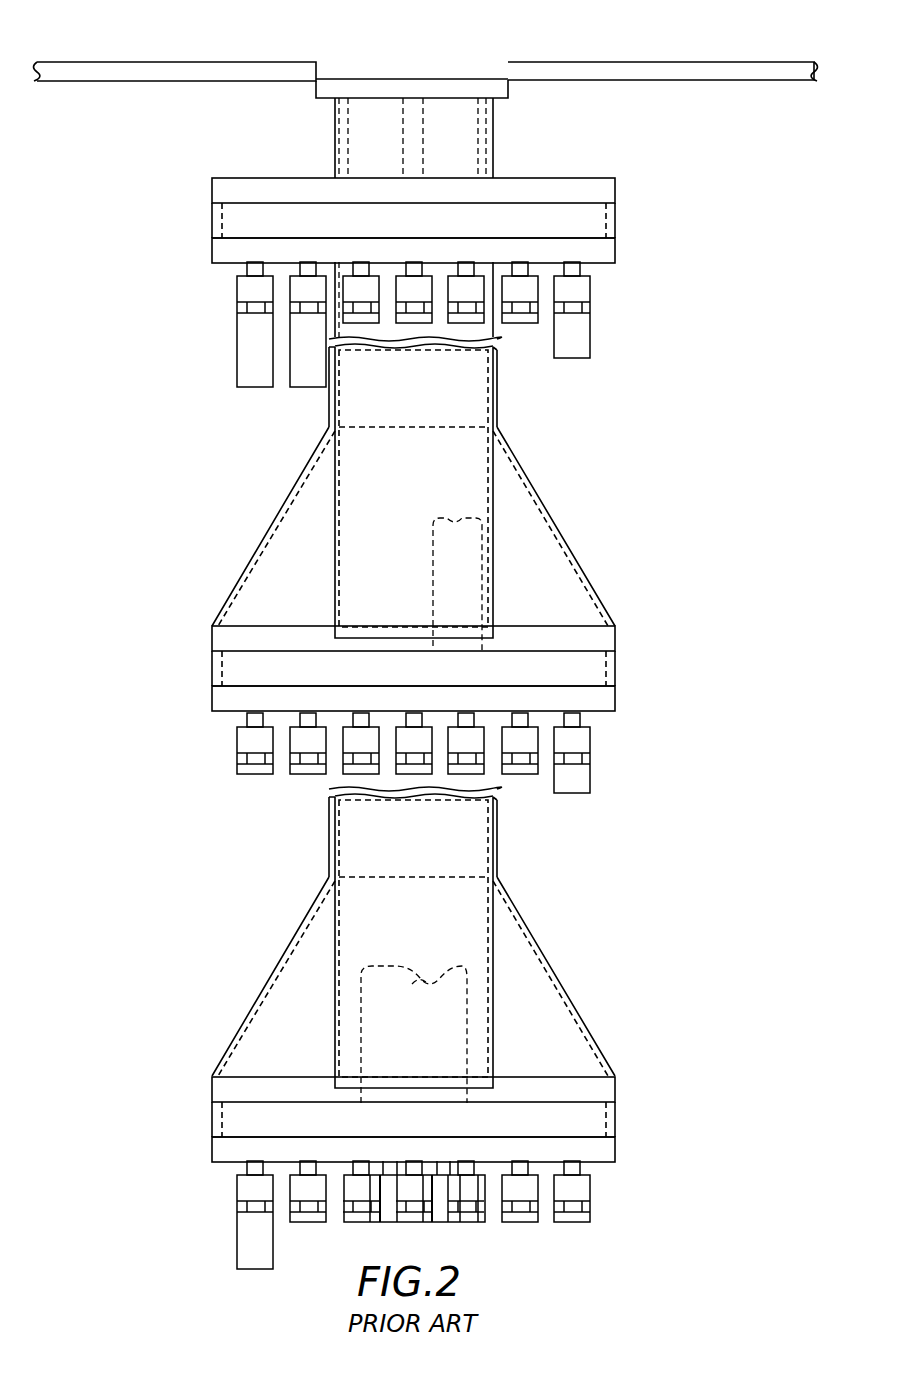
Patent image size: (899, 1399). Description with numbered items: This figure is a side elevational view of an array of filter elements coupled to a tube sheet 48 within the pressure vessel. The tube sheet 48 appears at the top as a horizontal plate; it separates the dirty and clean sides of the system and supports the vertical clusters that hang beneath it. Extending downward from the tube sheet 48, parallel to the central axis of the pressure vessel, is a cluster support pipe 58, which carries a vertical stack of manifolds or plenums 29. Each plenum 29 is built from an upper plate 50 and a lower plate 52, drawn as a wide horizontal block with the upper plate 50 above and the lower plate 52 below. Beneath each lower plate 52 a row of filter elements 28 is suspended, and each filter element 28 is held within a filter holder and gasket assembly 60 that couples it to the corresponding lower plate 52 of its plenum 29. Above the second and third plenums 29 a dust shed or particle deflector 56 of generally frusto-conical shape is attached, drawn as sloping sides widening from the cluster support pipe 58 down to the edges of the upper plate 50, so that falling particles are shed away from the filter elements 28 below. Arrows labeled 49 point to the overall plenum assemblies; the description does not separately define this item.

The filter element 28 is at (243, 344).
The plenum 29 is at (678, 231).
The tube sheet 48 is at (568, 63).
The bearing assembly 49 is at (623, 172).
The upper plate 50 is at (212, 183).
The lower plate 52 is at (215, 248).
The particle deflector 56 is at (283, 505).
The cluster support pipe 58 is at (494, 136).
The filter holder and gasket assembly 60 is at (240, 292).